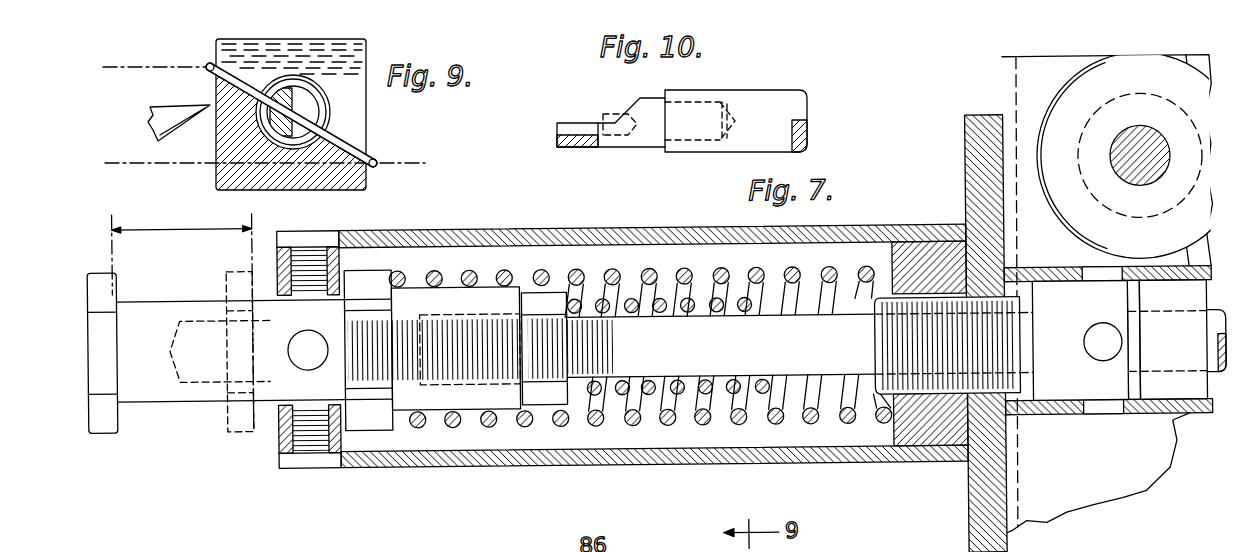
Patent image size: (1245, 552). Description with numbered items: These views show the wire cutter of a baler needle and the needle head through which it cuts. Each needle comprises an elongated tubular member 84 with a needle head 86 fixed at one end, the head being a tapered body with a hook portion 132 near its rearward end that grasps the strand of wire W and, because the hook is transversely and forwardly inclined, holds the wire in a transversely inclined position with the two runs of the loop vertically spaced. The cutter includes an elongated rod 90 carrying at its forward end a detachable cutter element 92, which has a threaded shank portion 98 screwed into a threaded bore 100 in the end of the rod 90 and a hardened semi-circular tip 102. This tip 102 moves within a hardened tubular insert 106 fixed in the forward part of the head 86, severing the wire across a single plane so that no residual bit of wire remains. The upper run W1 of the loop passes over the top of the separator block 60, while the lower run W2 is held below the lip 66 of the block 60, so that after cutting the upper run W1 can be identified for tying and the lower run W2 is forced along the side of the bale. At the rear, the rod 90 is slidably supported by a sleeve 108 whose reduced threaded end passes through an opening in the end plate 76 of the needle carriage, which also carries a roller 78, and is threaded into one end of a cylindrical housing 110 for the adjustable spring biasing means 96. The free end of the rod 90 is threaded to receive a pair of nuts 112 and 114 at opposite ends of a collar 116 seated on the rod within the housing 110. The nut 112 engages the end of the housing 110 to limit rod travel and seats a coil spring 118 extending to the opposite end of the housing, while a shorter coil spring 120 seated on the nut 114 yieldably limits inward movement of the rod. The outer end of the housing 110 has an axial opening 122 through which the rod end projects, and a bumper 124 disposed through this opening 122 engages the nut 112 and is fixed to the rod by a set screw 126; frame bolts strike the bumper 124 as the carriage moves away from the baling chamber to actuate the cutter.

In FIG. 9, the separator block 60 is at (150, 128).
In FIG. 9, the lip 66 is at (192, 106).
In FIG. 9, the needle head 86 is at (368, 138).
In FIG. 9, the semi-circular tip 102 is at (280, 120).
In FIG. 10, the semi-circular tip 102 is at (557, 144).
In FIG. 9, the tubular insert 106 is at (312, 93).
In FIG. 9, the hook portion 132 is at (330, 56).
In FIG. 9, the strand of wire W is at (344, 134).
In FIG. 9, the rearwardmost run of the loop W1 is at (210, 66).
In FIG. 9, the lower run of the loop W2 is at (376, 166).
In FIG. 10, the cutter rod 90 is at (773, 92).
In FIG. 7, the cutter rod 90 is at (820, 320).
In FIG. 10, the cutter element 92 is at (640, 137).
In FIG. 10, the threaded shank portion 98 is at (685, 108).
In FIG. 10, the threaded bore 100 is at (728, 142).
In FIG. 7, the end plate 76 is at (967, 152).
In FIG. 7, the roller 78 is at (1088, 86).
In FIG. 7, the tubular member 84 is at (1172, 419).
In FIG. 7, the sleeve 108 is at (1093, 408).
In FIG. 7, the cylindrical housing 110 is at (868, 466).
In FIG. 7, the nut 112 is at (370, 268).
In FIG. 7, the nut 114 is at (550, 292).
In FIG. 7, the collar 116 is at (470, 408).
In FIG. 7, the coil spring 118 is at (685, 270).
In FIG. 7, the shorter coil spring 120 is at (583, 300).
In FIG. 7, the axial opening 122 is at (283, 403).
In FIG. 7, the bumper 124 is at (163, 295).
In FIG. 7, the set screw 126 is at (392, 395).
In FIG. 7, the adjustable spring biasing means 96 is at (668, 428).